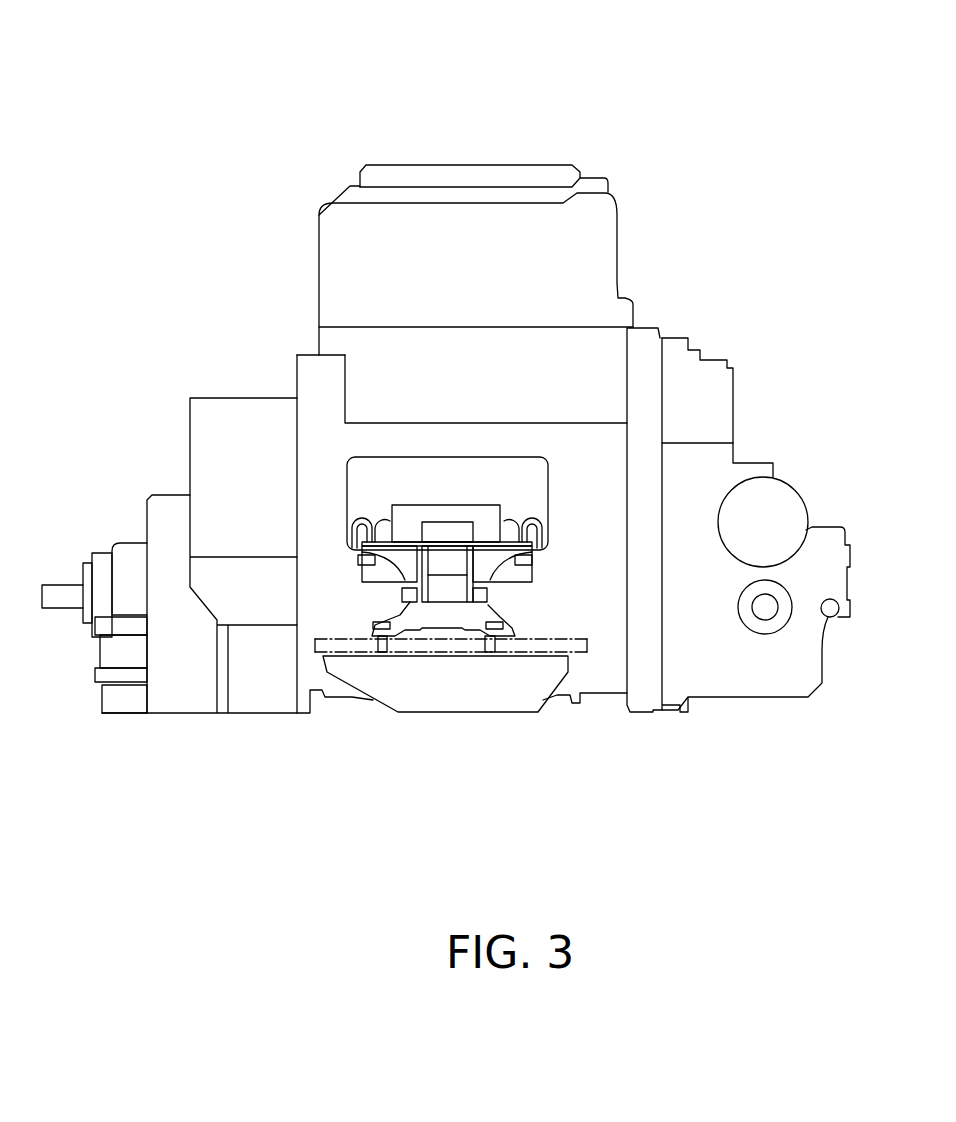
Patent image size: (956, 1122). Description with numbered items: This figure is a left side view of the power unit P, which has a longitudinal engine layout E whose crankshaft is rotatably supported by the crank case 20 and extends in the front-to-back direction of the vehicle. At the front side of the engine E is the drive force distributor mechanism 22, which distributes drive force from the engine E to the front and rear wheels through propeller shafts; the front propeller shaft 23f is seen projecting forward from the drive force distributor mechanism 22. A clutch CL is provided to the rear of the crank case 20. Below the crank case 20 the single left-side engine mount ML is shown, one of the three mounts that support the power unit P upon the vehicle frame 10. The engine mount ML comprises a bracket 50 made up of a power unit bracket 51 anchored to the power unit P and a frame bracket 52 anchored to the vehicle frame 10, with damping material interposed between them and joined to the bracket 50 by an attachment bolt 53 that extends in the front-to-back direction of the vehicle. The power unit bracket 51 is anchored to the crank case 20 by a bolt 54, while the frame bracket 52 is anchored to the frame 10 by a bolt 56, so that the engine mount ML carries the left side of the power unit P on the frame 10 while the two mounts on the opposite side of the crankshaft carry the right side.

The vehicle frame 10 is at (577, 636).
The crank case 20 is at (587, 675).
The drive force distributor mechanism 22 is at (129, 556).
The front propeller shaft 23f is at (55, 583).
The bracket 50 is at (446, 567).
The power unit bracket 51 is at (488, 540).
The frame bracket 52 is at (456, 622).
The attachment bolt 53 is at (487, 596).
The bolt 54 is at (360, 558).
The bolt 56 is at (376, 624).
The engine E is at (477, 130).
The power unit P is at (687, 151).
The clutch CL is at (763, 678).
The engine mount ML is at (440, 680).